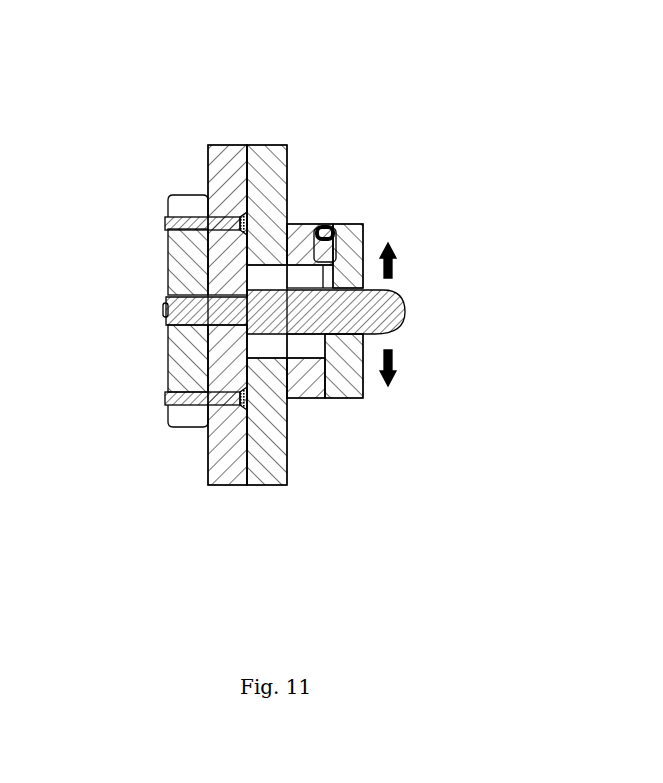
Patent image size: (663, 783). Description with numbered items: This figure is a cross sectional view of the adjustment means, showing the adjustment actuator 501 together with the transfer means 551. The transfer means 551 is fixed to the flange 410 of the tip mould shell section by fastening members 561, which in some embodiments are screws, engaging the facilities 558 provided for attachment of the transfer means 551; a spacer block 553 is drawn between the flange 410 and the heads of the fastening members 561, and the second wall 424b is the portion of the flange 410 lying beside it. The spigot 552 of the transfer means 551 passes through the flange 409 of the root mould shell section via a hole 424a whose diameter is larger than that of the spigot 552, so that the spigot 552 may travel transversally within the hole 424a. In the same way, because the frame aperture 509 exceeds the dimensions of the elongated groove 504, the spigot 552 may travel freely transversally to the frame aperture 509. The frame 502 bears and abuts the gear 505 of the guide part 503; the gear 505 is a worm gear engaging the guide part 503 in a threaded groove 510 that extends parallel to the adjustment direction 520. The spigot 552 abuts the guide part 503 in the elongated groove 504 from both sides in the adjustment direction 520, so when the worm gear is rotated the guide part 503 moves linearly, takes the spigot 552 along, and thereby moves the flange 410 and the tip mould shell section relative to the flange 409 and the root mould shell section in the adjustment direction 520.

The adjustment actuator 501 is at (399, 116).
The transfer means 551 is at (180, 153).
The facilities for attachment of the transfer means 558 is at (173, 195).
The fastening members 561 is at (165, 218).
The spacer block 553 is at (168, 258).
The second wall 424b is at (200, 290).
The hole 424a is at (266, 255).
The flange of the tip mould shell section 410 is at (145, 315).
The flange of the root mould shell section 409 is at (350, 282).
The spigot 552 is at (405, 306).
The frame 502 is at (302, 224).
The guide part 503 is at (372, 295).
The gear 505 is at (330, 227).
The threaded groove 510 is at (345, 225).
The elongated groove 504 is at (367, 246).
The adjustment direction 520 is at (395, 358).
The frame aperture 509 is at (335, 400).